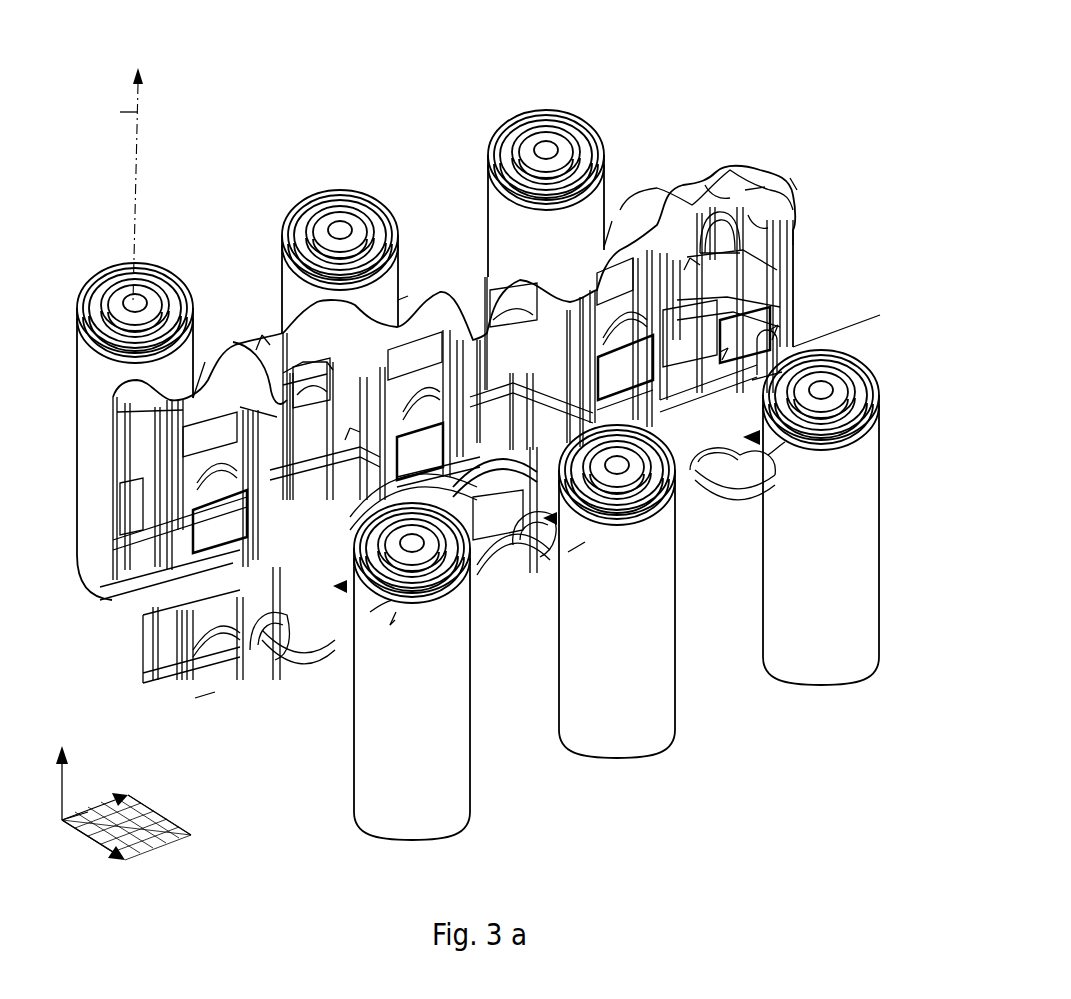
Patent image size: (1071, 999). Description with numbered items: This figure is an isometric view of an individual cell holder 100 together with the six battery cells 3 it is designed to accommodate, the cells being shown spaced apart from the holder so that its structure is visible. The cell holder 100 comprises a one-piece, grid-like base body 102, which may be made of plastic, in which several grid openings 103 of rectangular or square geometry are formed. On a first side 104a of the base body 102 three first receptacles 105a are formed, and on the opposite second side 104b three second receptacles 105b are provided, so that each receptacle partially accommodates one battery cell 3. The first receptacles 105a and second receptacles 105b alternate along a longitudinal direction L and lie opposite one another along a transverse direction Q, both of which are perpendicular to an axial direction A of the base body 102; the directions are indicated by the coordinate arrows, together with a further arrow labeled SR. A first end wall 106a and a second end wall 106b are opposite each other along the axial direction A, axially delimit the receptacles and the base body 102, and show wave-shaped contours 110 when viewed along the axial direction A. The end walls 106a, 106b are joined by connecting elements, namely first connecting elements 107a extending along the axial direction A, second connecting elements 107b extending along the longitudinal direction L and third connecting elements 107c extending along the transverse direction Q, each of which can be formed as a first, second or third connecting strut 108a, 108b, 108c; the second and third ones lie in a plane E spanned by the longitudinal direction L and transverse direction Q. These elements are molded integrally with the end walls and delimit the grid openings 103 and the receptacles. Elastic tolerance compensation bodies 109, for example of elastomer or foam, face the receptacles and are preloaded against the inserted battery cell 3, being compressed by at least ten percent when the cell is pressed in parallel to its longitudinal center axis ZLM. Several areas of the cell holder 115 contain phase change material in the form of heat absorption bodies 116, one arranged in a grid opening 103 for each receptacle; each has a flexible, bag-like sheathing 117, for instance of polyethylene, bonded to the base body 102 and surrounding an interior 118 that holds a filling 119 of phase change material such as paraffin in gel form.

The battery cell 3 is at (827, 562).
The cell holder 100 is at (796, 163).
The base body 102 is at (815, 231).
The grid opening 103 is at (443, 505).
The first side 104a is at (815, 264).
The second side 104b is at (482, 220).
The first receptacle 105a is at (370, 612).
The second receptacle 105b is at (612, 212).
The first end wall 106a is at (203, 695).
The second end wall 106b is at (755, 190).
The first connecting element 107a is at (390, 625).
The second connecting element 107b is at (690, 258).
The third connecting element 107c is at (778, 325).
The first connecting strut 108a is at (670, 507).
The second connecting strut 108b is at (492, 249).
The third connecting strut 108c is at (647, 294).
The tolerance compensation body 109 is at (318, 635).
The wave-shaped contour 110 is at (752, 470).
The area of the cell holder 115 is at (262, 688).
The heat absorption body 116 is at (485, 552).
The sheathing 117 is at (529, 512).
The interior 118 is at (522, 505).
The filling 119 is at (513, 584).
The stacking direction SR is at (138, 68).
The longitudinal center axis ZLM is at (120, 112).
The axial direction A is at (58, 745).
The longitudinal direction L is at (88, 812).
The plane E is at (143, 812).
The transverse direction Q is at (82, 840).